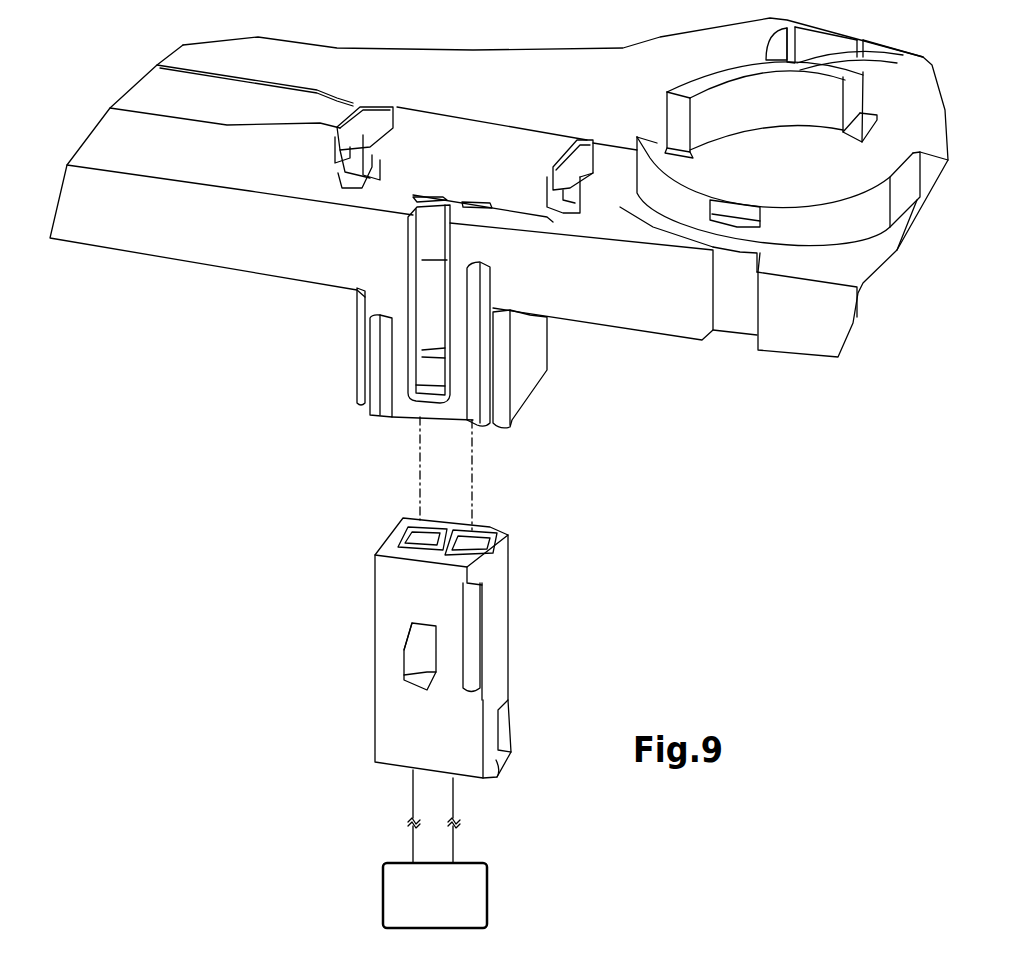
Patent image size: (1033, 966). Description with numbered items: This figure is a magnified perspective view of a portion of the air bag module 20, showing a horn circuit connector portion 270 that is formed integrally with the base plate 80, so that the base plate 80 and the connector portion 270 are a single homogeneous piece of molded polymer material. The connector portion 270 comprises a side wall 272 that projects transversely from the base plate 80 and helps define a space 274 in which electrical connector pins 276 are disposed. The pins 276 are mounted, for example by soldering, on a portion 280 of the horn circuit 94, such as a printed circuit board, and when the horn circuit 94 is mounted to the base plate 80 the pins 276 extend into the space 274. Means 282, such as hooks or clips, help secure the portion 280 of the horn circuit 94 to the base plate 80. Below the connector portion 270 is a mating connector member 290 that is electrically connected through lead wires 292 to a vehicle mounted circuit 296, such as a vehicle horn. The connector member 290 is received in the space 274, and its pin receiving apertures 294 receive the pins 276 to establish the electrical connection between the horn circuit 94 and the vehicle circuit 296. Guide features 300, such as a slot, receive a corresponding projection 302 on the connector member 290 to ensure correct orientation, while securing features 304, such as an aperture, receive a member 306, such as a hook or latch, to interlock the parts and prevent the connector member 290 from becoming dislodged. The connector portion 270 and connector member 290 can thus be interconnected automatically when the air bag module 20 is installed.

The air bag module 20 is at (202, 333).
The horn circuit 94 is at (253, 102).
The base plate 80 is at (648, 285).
The portion of the horn circuit 280 is at (477, 160).
The means for securing 282 is at (367, 123).
The horn circuit connector portion 270 is at (305, 358).
The side wall 272 is at (527, 387).
The space 274 is at (423, 323).
The electrical connector pins 276 is at (483, 288).
The guide features 300 is at (380, 362).
The securing features 304 is at (425, 388).
The mating connector member 290 is at (497, 613).
The projection 302 is at (470, 635).
The pin receiving apertures 294 is at (443, 523).
The member 306 is at (418, 658).
The lead wires 292 is at (453, 800).
The vehicle mounted circuit 296 is at (383, 888).